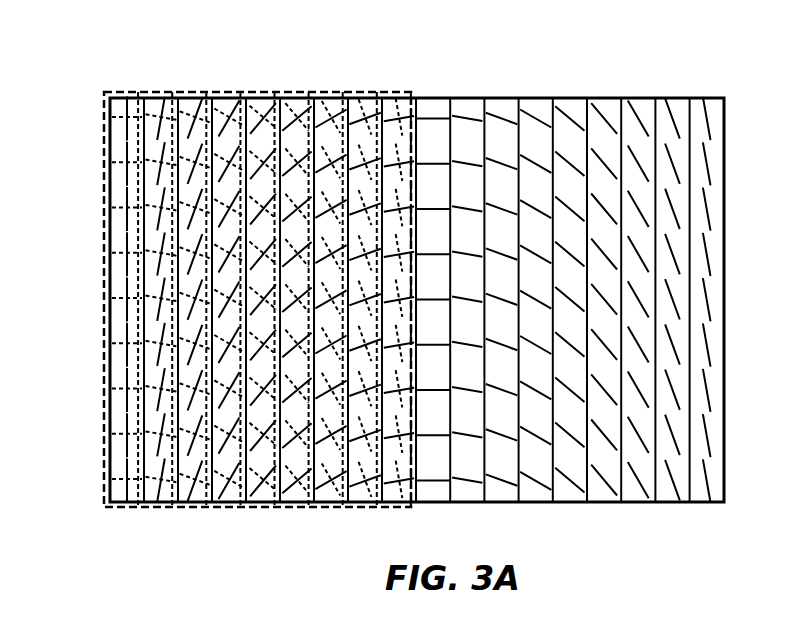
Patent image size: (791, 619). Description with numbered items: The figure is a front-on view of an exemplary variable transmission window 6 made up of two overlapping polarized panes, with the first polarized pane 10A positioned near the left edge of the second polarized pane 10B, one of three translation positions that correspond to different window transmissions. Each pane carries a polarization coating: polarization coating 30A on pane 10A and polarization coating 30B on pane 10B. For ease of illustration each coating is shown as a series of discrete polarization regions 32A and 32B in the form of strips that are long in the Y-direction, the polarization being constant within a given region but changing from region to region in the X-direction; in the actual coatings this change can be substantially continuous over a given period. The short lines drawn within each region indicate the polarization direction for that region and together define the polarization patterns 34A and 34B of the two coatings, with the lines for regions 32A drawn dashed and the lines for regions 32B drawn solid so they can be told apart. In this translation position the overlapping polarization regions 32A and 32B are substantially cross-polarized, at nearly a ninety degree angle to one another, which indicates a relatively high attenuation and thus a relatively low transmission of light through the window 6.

The variable transmission window 6 is at (219, 285).
The polarized pane 10A is at (270, 256).
The polarized pane 10B is at (573, 279).
The polarization coating 30A is at (270, 92).
The polarization coating 30B is at (635, 97).
The polarization regions 32A is at (145, 507).
The polarization regions 32B is at (573, 295).
The polarization pattern 34A is at (253, 70).
The polarization pattern 34B is at (547, 98).